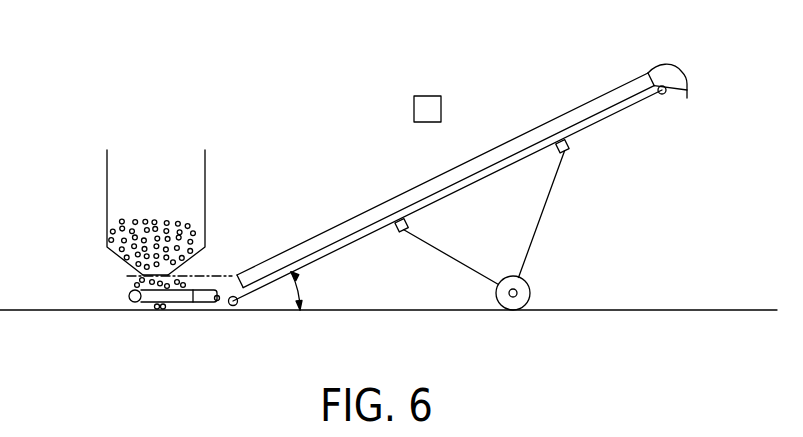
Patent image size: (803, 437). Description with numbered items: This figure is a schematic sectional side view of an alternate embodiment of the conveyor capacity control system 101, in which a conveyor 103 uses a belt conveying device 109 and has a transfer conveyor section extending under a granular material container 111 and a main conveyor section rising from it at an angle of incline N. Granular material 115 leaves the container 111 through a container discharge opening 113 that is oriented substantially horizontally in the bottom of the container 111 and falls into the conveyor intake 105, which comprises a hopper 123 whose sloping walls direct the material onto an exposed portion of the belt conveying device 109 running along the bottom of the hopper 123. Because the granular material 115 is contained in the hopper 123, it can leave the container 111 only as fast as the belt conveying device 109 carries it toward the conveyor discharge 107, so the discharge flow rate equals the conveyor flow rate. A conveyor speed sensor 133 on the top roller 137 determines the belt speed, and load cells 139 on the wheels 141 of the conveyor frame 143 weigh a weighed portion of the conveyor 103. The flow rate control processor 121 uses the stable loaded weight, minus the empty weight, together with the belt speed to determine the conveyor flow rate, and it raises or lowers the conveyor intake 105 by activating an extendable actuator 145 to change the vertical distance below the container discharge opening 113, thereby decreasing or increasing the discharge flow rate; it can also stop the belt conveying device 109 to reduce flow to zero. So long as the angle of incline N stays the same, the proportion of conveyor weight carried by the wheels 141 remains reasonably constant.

The conveyor capacity control system 101 is at (268, 159).
The conveyor 103 is at (562, 116).
The conveyor intake 105 is at (128, 282).
The conveyor discharge 107 is at (683, 69).
The belt conveying device 109 is at (195, 303).
The container 111 is at (107, 162).
The container discharge opening 113 is at (167, 270).
The granular material 115 is at (143, 222).
The flow rate control processor 121 is at (433, 96).
The hopper 123 is at (128, 285).
The conveyor speed sensor 133 is at (665, 94).
The top roller 137 is at (674, 87).
The load cell 139 is at (518, 290).
The wheel 141 is at (530, 292).
The conveyor frame 143 is at (545, 206).
The extendable actuator 145 is at (160, 312).
The angle of incline N is at (304, 291).